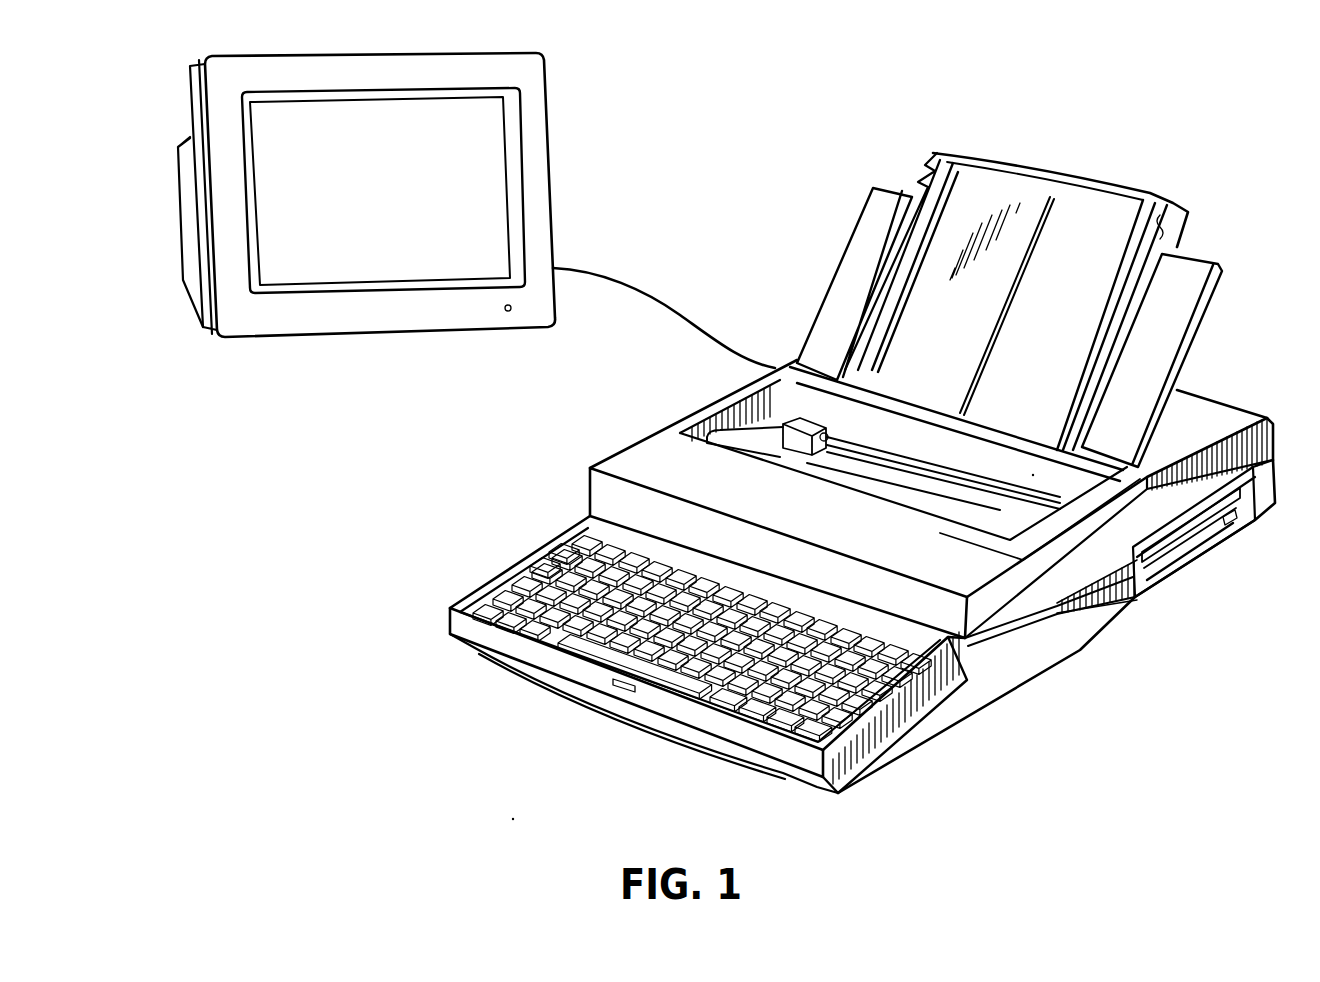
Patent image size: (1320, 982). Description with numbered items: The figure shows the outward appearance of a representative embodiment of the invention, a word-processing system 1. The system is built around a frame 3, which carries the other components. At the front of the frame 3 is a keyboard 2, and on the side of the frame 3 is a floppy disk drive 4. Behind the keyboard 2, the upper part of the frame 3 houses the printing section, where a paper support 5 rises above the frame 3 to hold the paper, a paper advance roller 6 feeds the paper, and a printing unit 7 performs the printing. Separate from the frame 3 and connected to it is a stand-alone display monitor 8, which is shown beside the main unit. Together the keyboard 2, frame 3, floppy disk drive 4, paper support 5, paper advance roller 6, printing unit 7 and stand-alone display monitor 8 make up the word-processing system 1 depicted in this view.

The word-processing system 1 is at (822, 74).
The keyboard 2 is at (533, 553).
The frame 3 is at (1037, 667).
The floppy disk drive 4 is at (1223, 527).
The paper support 5 is at (1188, 228).
The paper advance roller 6 is at (950, 497).
The printing unit 7 is at (828, 430).
The stand-alone display monitor 8 is at (552, 120).